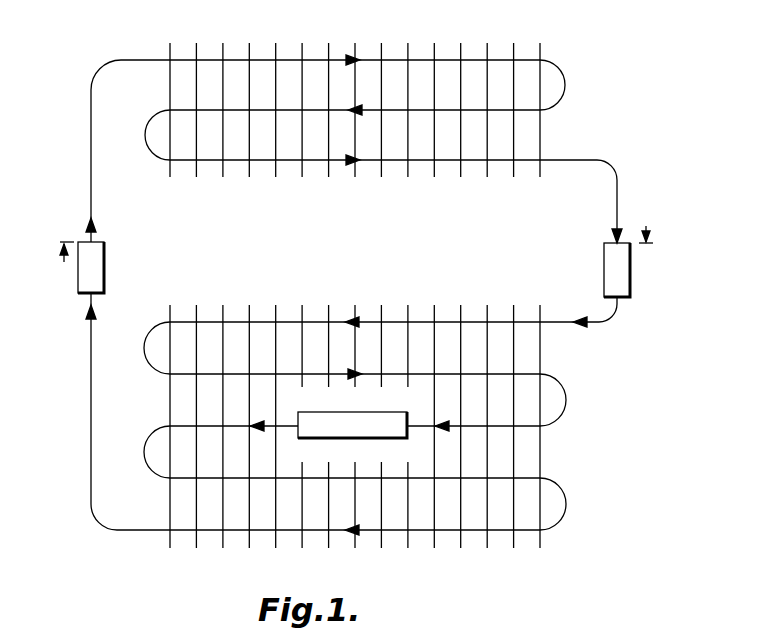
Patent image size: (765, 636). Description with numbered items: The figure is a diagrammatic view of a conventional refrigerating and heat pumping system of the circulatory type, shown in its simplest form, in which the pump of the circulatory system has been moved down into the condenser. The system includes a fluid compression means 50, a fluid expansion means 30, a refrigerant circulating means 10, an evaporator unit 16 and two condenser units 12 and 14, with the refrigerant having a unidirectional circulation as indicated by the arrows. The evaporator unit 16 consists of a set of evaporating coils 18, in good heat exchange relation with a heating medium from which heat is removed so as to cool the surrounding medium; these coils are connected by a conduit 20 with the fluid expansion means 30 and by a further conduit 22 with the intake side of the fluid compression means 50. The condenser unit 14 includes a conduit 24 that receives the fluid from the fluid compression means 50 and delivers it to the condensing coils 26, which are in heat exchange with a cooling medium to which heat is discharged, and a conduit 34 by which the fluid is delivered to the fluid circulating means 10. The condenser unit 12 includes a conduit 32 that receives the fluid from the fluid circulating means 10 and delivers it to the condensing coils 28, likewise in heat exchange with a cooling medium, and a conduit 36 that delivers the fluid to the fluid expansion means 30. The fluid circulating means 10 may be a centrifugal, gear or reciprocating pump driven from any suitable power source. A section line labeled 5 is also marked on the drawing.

The section line 5- 5 is at (355, 244).
The refrigerant circulating means 10 is at (367, 441).
The condenser unit 12 is at (405, 549).
The condenser unit 14 is at (412, 303).
The evaporator unit 16 is at (362, 176).
The evaporating coils 18 is at (369, 60).
The conduit 20 is at (94, 237).
The conduit 22 is at (613, 242).
The conduit 24 is at (617, 312).
The condensing coils 26 is at (313, 320).
The condensing coils 28 is at (266, 532).
The fluid expansion means 30 is at (106, 260).
The conduit 32 is at (283, 424).
The conduit 34 is at (417, 424).
The conduit 36 is at (90, 300).
The fluid compression means 50 is at (633, 268).